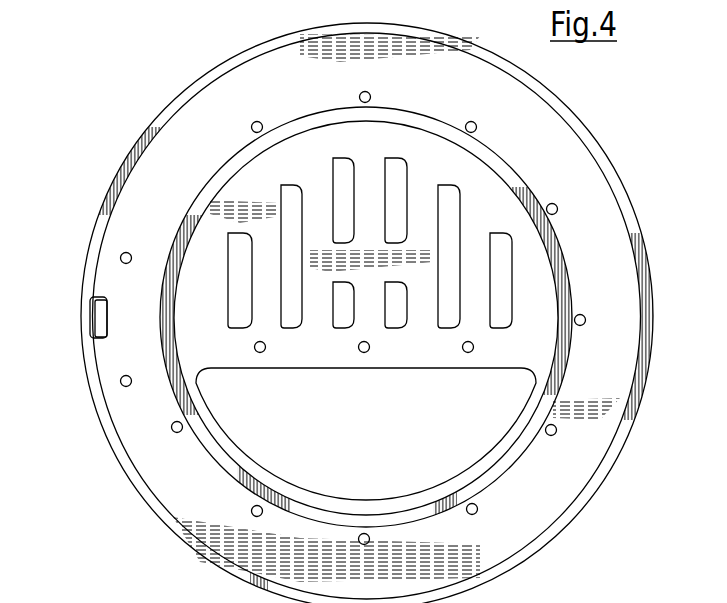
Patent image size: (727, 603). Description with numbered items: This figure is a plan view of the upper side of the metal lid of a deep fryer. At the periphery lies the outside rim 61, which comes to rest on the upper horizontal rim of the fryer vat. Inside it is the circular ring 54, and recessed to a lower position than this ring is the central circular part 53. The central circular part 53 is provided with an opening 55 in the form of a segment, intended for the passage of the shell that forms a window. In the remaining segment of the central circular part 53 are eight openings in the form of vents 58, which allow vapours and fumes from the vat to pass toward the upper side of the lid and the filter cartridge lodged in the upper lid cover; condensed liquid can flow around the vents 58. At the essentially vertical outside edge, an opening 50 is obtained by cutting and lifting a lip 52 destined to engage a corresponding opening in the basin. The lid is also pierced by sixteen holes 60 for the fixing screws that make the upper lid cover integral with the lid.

The opening 50 is at (95, 318).
The lip 52 is at (92, 299).
The central circular part 53 is at (361, 251).
The circular ring 54 is at (608, 305).
The opening 55 is at (378, 436).
The vents 58 is at (333, 166).
The holes 60 is at (557, 430).
The outside rim 61 is at (547, 96).